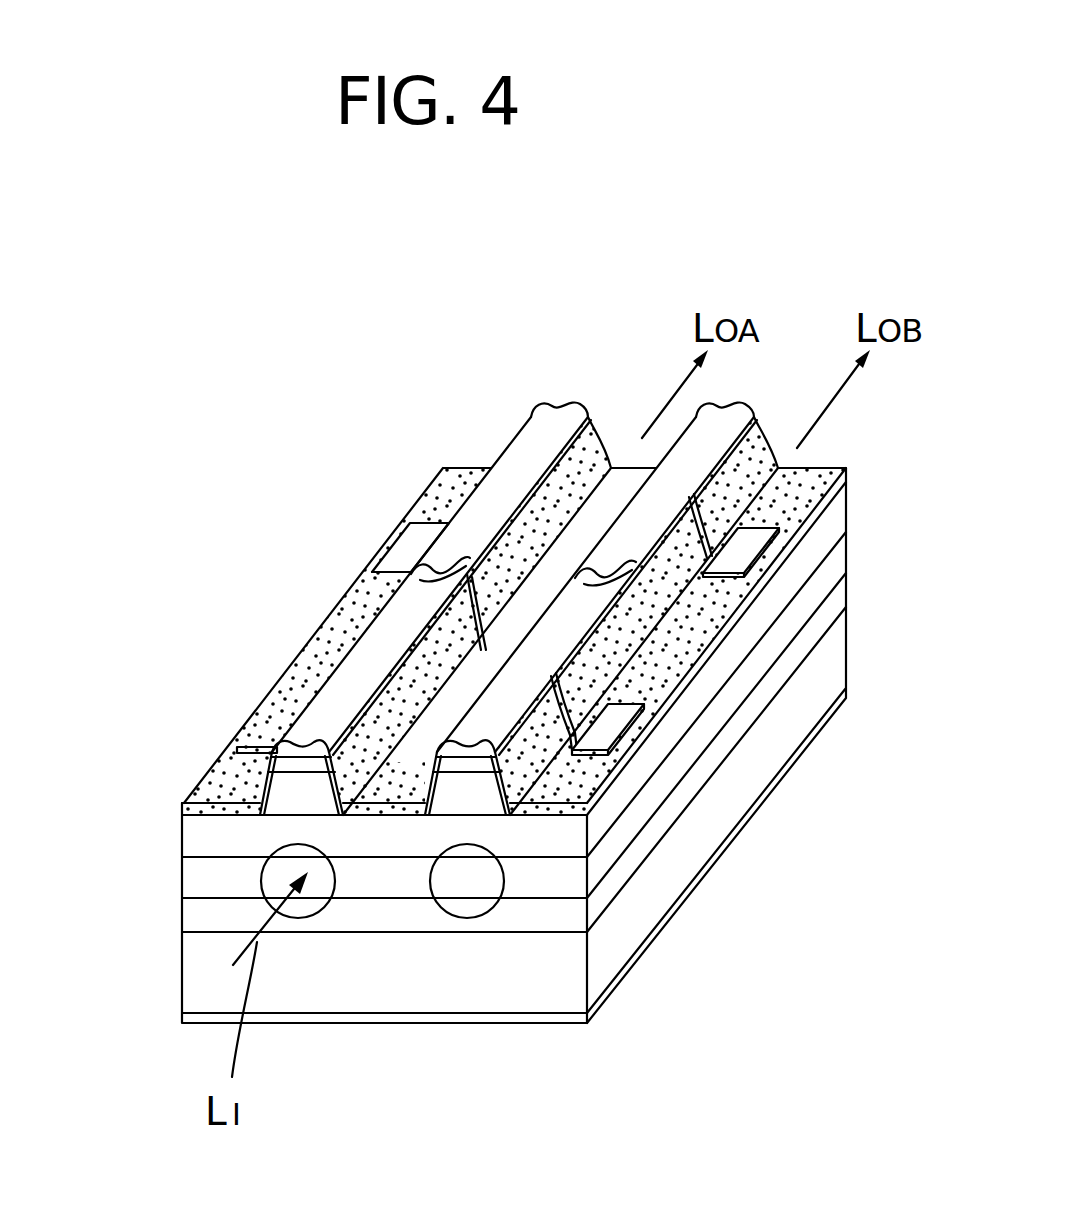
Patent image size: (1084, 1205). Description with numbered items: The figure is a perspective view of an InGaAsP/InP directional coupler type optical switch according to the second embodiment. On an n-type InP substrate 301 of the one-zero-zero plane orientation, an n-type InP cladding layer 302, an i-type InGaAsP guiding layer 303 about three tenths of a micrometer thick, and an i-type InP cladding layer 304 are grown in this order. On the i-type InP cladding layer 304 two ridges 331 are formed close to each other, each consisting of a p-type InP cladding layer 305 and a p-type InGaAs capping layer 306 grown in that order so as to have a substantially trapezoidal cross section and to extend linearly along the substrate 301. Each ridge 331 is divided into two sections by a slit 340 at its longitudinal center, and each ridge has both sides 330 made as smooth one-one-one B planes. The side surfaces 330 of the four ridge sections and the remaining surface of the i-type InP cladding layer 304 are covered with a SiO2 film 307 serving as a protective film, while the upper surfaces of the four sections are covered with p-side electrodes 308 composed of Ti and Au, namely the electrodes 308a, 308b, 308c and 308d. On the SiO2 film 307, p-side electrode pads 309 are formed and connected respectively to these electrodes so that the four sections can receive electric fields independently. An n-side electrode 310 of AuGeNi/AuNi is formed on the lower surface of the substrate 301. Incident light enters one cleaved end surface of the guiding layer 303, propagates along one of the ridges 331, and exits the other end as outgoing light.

The n-type InP substrate 301 is at (442, 988).
The lower cladding layer 302 is at (350, 963).
The i-type InGaAsP guiding layer 303 is at (398, 880).
The i-type InP cladding layer 304 is at (203, 840).
The p-type InP cladding layer 305 is at (292, 795).
The p-type InGaAs capping layer 306 is at (282, 758).
The SiO2 film 307 is at (338, 630).
The p-side electrodes 308 is at (493, 205).
The p-side electrode 308a is at (385, 637).
The p-side electrode 308b is at (467, 573).
The p-side electrode 308c is at (517, 670).
The p-side electrode 308d is at (607, 547).
The p-side electrode pads 309 is at (750, 540).
The n-side electrode 310 is at (715, 870).
The side surfaces 330 is at (543, 795).
The ridges 331 is at (540, 770).
The slit 340 is at (338, 650).